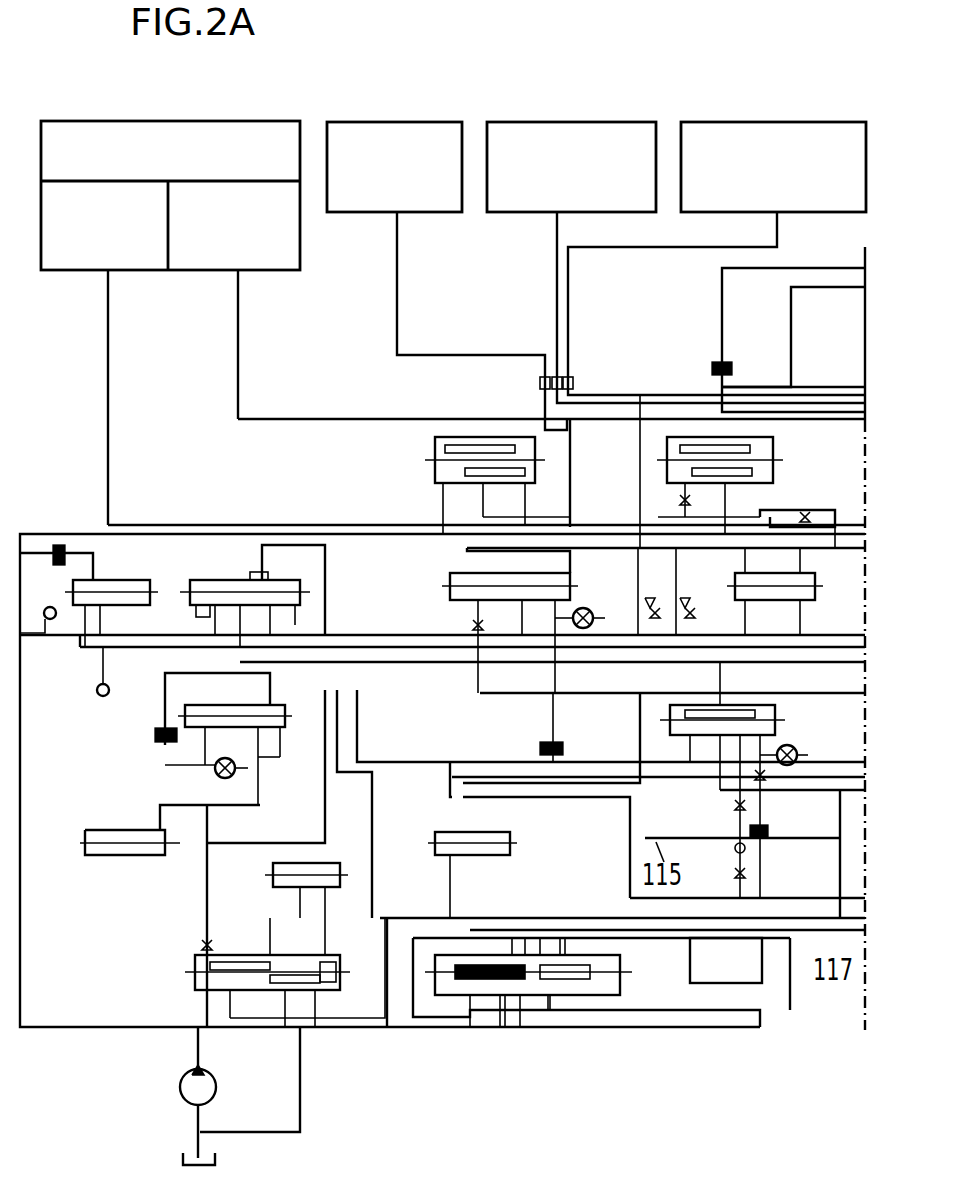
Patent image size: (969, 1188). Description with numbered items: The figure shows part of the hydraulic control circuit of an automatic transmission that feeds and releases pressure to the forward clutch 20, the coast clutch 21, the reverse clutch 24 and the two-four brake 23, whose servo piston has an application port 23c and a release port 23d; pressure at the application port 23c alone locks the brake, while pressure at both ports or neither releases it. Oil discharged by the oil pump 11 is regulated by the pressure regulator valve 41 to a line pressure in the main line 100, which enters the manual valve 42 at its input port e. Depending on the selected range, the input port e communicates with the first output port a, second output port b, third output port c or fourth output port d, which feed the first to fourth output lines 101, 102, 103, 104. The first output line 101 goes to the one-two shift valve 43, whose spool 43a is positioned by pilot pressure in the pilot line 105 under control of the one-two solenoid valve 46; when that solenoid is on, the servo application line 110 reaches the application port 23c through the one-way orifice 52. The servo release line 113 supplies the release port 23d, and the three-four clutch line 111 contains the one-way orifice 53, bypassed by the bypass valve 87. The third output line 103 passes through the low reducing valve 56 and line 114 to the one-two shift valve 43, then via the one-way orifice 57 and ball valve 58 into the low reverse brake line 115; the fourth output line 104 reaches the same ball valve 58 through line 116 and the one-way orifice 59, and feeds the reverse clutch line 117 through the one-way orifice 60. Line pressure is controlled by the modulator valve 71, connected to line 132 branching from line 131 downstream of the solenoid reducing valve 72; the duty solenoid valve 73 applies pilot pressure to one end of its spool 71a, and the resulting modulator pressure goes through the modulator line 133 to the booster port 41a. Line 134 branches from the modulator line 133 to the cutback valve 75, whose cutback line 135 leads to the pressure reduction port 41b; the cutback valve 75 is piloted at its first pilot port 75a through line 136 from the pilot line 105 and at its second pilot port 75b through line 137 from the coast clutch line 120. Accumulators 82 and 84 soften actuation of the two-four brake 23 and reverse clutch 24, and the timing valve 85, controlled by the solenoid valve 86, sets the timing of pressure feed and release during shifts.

The oil pump 11 is at (180, 1089).
The forward clutch 20 is at (550, 120).
The coast clutch 21 is at (744, 120).
The 2-4 brake 23 is at (146, 118).
The application port 23c is at (62, 272).
The release port 23d is at (280, 272).
The reverse clutch 24 is at (384, 120).
The pressure regulator valve 41 is at (190, 950).
The booster port 41a is at (212, 941).
The pressure reduction port 41b is at (332, 976).
The manual valve 42 is at (628, 954).
The 1-2 shift valve 43 is at (780, 710).
The spool 43a is at (756, 706).
The 1-2 solenoid valve 46 is at (790, 770).
The one-way orifice 52 is at (672, 599).
The one-way orifice 53 is at (706, 596).
The low reducing valve 56 is at (496, 828).
The one-way orifice 57 is at (764, 814).
The ball valve 58 is at (762, 849).
The one-way orifice 59 is at (762, 874).
The one-way orifice 60 is at (824, 508).
The modulator valve 71 is at (288, 734).
The spool 71a is at (224, 706).
The solenoid reducing valve 72 is at (108, 566).
The duty solenoid valve 73 is at (212, 778).
The cutback valve 75 is at (206, 570).
The first pilot port 75a is at (258, 579).
The second pilot port 75b is at (200, 622).
The accumulator 82 is at (434, 447).
The accumulator 84 is at (775, 440).
The timing valve 85 is at (568, 580).
The solenoid valve 86 is at (582, 614).
The bypass valve 87 is at (786, 600).
The main line 100 is at (422, 1028).
The first output line 101 is at (574, 896).
The second output line 102 is at (692, 1028).
The third output line 103 is at (481, 909).
The fourth output line 104 is at (603, 912).
The pilot line 105 is at (786, 732).
The servo application line 110 is at (382, 534).
The 3-4 clutch line 111 is at (722, 318).
The servo release line 113 is at (358, 418).
The line 114 is at (584, 790).
The low reverse brake line 115 is at (792, 322).
The line 116 is at (726, 960).
The reverse clutch line 117 is at (467, 354).
The coast clutch line 120 is at (568, 322).
The line 131 is at (114, 647).
The line 132 is at (208, 670).
The modulator line 133 is at (232, 808).
The line 134 is at (328, 592).
The cutback line 135 is at (372, 812).
The line 136 is at (398, 762).
The line 137 is at (378, 635).
The first output port a is at (543, 936).
The second output port b is at (548, 1028).
The third output port c is at (518, 936).
The fourth output port d is at (568, 936).
The input port e is at (505, 1028).